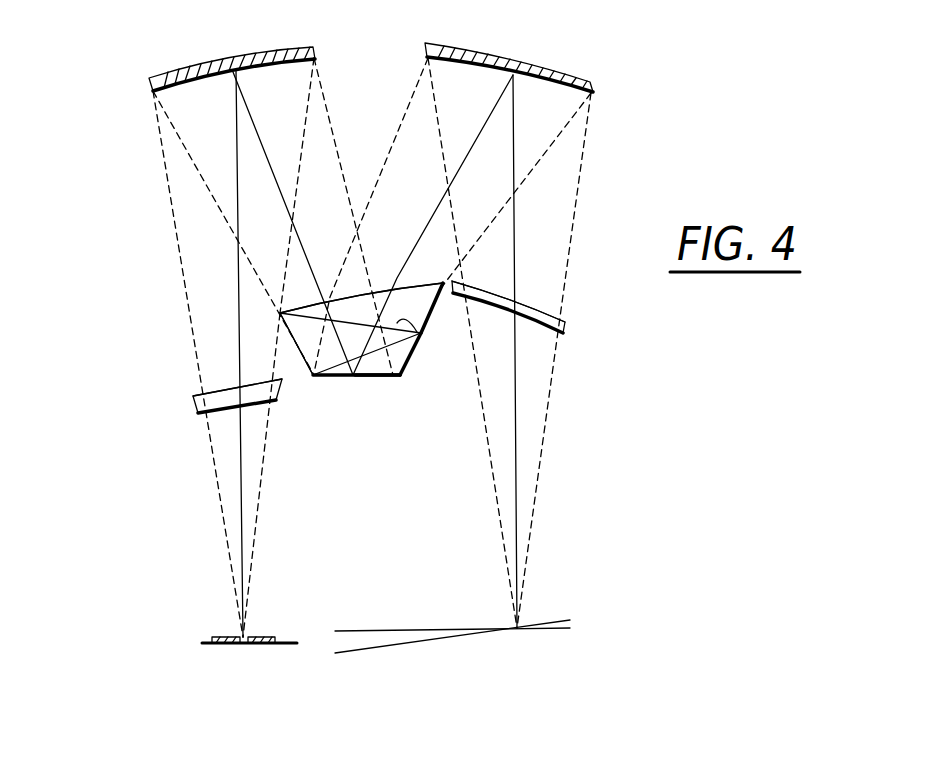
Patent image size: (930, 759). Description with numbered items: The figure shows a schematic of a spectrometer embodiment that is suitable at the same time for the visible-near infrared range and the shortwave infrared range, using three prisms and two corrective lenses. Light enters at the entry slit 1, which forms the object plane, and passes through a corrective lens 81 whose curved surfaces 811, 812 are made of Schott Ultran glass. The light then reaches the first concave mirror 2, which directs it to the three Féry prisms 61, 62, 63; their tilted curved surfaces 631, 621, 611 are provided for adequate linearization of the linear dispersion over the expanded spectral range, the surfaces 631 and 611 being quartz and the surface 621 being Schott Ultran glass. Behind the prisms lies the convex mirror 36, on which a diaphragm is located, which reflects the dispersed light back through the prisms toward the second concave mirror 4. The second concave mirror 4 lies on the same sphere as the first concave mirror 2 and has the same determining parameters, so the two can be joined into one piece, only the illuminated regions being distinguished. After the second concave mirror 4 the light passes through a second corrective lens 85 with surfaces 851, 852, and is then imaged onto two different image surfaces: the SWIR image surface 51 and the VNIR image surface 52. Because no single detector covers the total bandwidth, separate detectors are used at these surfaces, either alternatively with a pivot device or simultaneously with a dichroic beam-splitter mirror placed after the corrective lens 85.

The entry slit 1 is at (262, 636).
The first concave mirror 2 is at (158, 78).
The second concave mirror 4 is at (575, 70).
The convex mirror 36 is at (373, 353).
The first Féry prism 61 is at (367, 377).
The surface of first Féry prism 611 is at (397, 377).
The second Féry prism 62 is at (300, 370).
The surface of second Féry prism 621 is at (410, 352).
The third Féry prism 63 is at (421, 333).
The surface of third Féry prism 631 is at (414, 288).
The corrective lens 81 is at (202, 411).
The surface of corrective lens 811 is at (200, 420).
The surface of corrective lens 812 is at (193, 397).
The corrective lens 85 is at (537, 327).
The surface of corrective lens 851 is at (540, 300).
The surface of corrective lens 852 is at (565, 328).
The SWIR image surface 51 is at (353, 630).
The VNIR image surface 52 is at (553, 622).